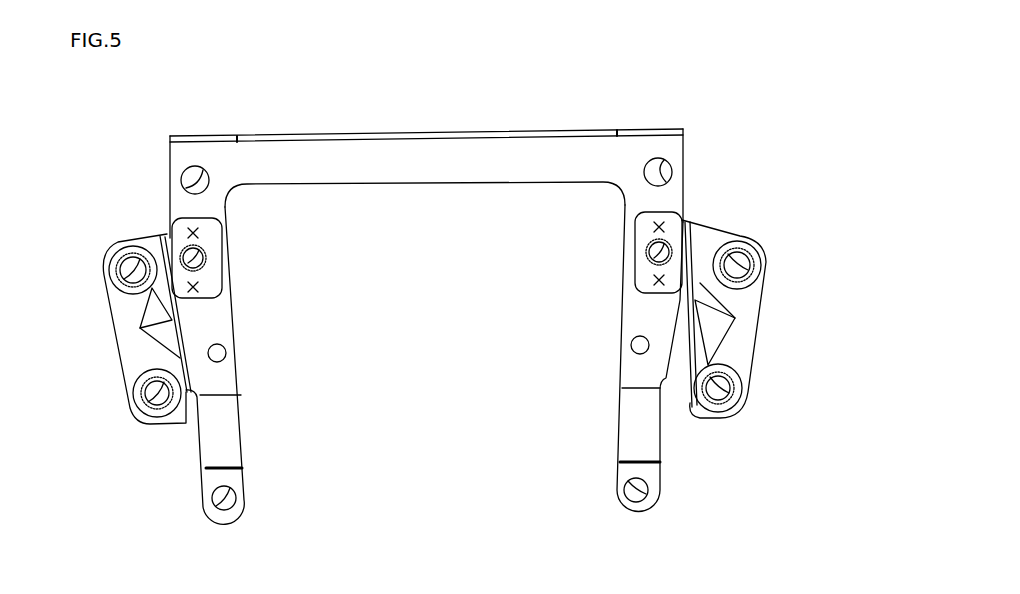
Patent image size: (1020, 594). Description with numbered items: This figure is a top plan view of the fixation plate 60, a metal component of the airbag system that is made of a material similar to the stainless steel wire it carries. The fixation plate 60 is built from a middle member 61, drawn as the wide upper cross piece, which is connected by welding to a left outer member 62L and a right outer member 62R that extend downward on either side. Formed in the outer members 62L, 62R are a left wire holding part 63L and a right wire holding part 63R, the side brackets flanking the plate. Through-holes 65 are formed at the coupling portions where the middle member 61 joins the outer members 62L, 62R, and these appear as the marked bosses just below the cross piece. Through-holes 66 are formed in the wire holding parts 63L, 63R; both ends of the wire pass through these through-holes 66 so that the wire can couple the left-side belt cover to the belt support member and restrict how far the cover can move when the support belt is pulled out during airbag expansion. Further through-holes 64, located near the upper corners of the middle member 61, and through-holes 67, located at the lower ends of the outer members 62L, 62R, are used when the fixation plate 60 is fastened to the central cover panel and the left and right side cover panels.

The fixation plate 60 is at (386, 110).
The middle member 61 is at (417, 175).
The left outer member 62L is at (232, 435).
The right outer member 62R is at (627, 412).
The left wire holding part 63L is at (118, 347).
The right wire holding part 63R is at (760, 328).
The through-hole 64 is at (182, 176).
The through-hole 65 is at (200, 256).
The through-hole 66 is at (133, 273).
The through-hole 67 is at (207, 508).